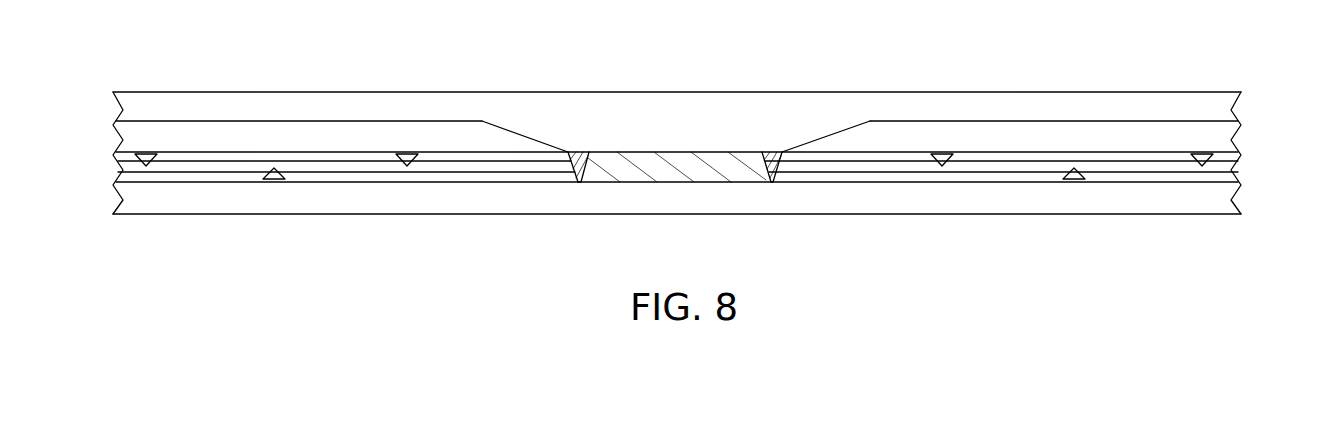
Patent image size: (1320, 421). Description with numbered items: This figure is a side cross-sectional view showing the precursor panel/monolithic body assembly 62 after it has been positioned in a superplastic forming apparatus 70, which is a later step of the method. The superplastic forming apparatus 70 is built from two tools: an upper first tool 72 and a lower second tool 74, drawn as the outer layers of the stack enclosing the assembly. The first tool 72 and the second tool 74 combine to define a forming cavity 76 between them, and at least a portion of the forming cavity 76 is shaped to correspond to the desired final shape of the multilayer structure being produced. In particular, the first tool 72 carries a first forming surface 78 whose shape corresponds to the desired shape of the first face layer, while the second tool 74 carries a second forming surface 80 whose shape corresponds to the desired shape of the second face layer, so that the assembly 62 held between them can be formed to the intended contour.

The precursor panel/monolithic body assembly 62 is at (1274, 95).
The superplastic forming apparatus 70 is at (102, 92).
The first tool 72 is at (158, 92).
The second tool 74 is at (160, 215).
The forming cavity 76 is at (331, 143).
The first forming surface 78 is at (380, 122).
The second forming surface 80 is at (362, 182).